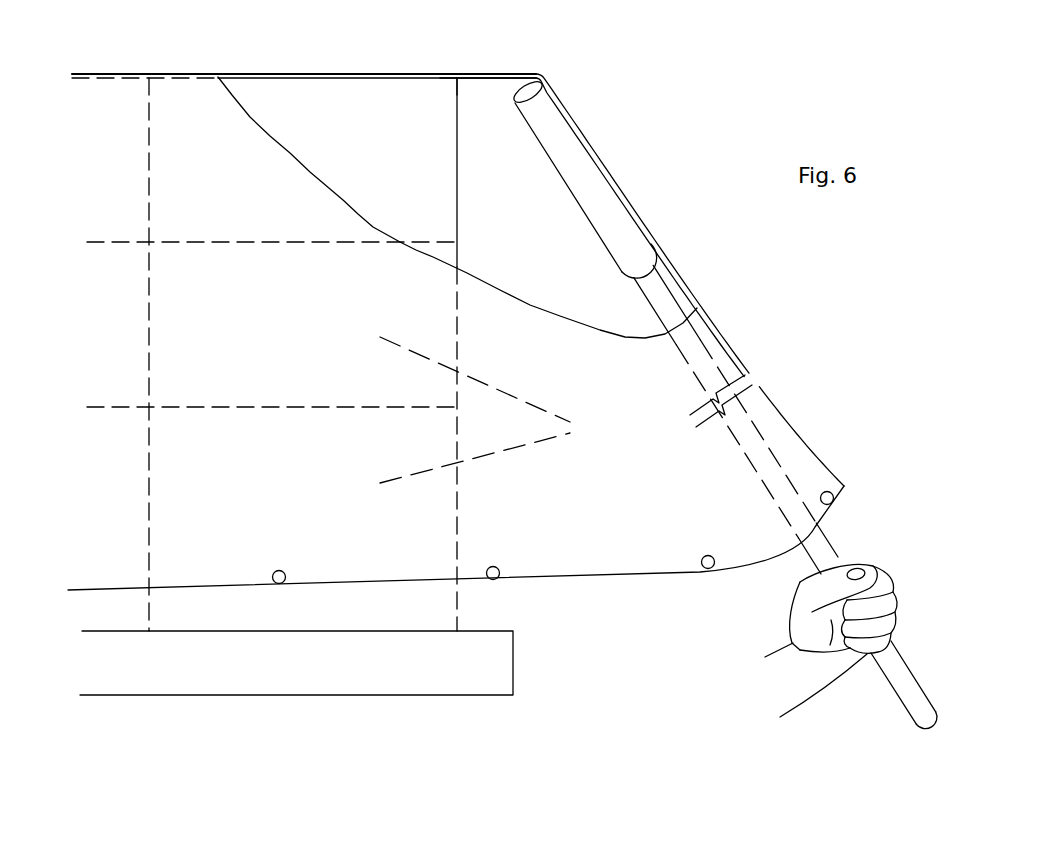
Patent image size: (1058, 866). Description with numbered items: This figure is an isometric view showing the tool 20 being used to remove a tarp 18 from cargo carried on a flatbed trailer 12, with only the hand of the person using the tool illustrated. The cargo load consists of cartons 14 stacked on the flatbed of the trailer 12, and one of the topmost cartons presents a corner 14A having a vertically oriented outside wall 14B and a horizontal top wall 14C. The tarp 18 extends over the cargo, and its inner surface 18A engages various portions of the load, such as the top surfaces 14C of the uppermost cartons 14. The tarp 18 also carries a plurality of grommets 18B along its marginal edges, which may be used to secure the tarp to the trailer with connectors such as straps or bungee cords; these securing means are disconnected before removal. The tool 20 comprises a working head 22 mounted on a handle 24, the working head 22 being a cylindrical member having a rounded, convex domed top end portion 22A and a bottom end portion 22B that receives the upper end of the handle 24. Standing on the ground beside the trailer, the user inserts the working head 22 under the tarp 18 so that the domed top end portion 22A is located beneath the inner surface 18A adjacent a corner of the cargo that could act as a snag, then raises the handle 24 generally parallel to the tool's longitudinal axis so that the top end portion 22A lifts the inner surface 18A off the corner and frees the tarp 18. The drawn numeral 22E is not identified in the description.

The flatbed trailer 12 is at (485, 663).
The cartons 14 is at (415, 167).
The corner 14A is at (452, 83).
The outside wall 14B is at (460, 165).
The top wall 14C is at (403, 80).
The tarp 18 is at (588, 545).
The inner surface 18A is at (478, 82).
The grommets 18B is at (277, 584).
The tool 20 is at (834, 540).
The working head 22 is at (588, 180).
The top end portion 22A is at (546, 86).
The bottom end portion 22B is at (642, 247).
The tube end cap 22E is at (526, 86).
The handle 24 is at (662, 301).